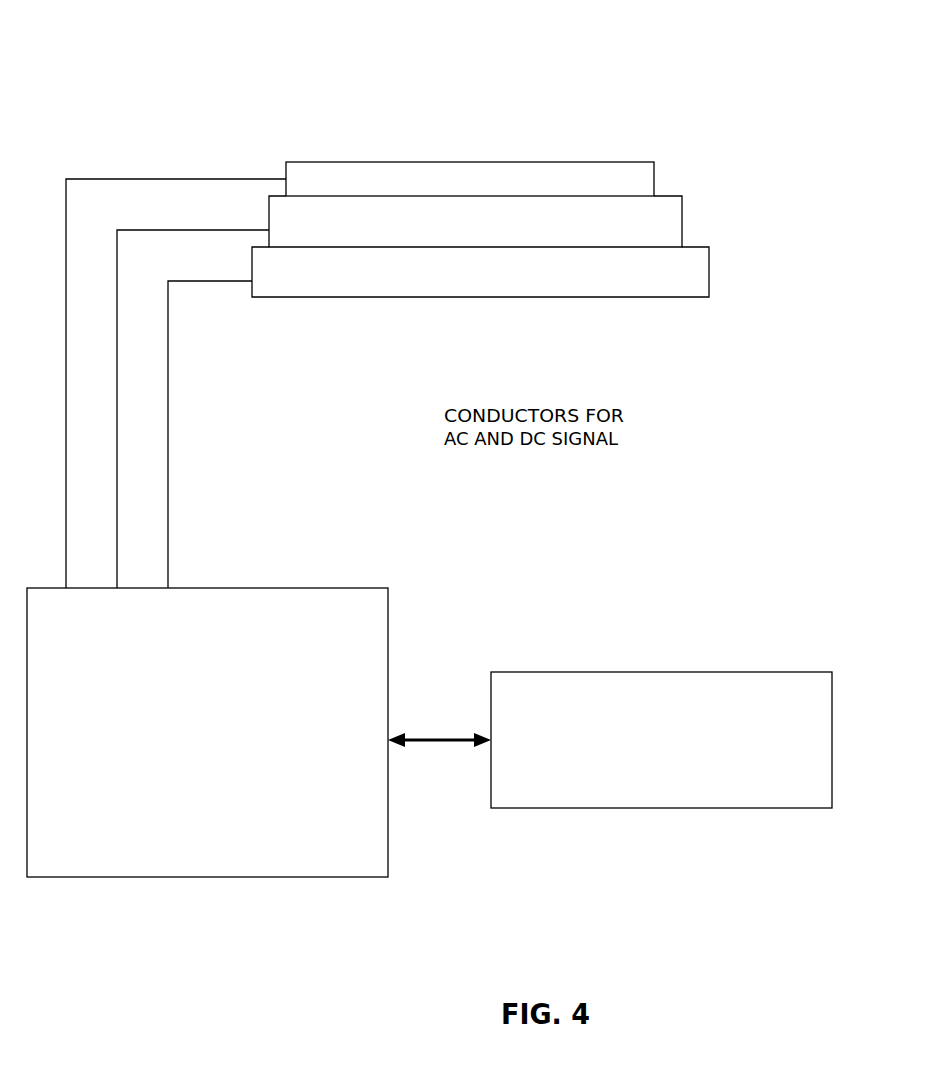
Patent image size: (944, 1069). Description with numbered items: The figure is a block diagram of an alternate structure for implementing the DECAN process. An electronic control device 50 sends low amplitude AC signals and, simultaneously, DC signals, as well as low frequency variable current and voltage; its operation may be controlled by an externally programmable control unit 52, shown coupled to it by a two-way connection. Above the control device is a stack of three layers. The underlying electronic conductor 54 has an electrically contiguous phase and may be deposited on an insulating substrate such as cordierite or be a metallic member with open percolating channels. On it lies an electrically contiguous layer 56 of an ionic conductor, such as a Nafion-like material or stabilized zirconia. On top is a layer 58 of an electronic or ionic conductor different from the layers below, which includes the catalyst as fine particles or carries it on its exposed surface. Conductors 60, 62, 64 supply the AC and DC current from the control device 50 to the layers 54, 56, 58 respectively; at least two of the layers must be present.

The electronic control device 50 is at (207, 732).
The programmable control unit 52 is at (661, 740).
The electronic conductor 54 is at (718, 282).
The ionic conductor layer 56 is at (692, 209).
The catalyst and conducting layer 58 is at (630, 155).
The conductor/electrode 60 is at (176, 468).
The conductor/electrode 62 is at (125, 434).
The conductor/electrode 64 is at (74, 401).